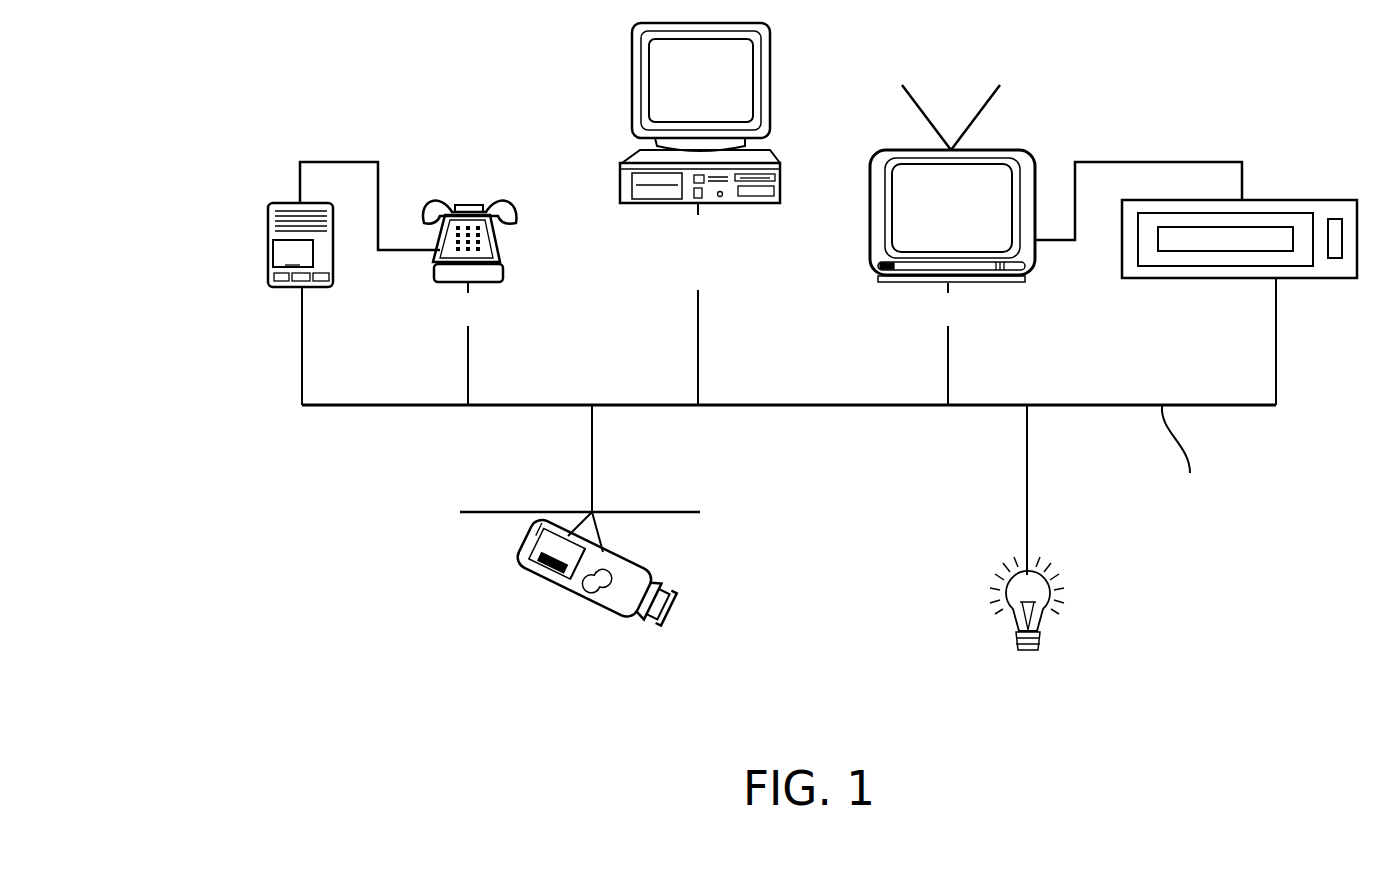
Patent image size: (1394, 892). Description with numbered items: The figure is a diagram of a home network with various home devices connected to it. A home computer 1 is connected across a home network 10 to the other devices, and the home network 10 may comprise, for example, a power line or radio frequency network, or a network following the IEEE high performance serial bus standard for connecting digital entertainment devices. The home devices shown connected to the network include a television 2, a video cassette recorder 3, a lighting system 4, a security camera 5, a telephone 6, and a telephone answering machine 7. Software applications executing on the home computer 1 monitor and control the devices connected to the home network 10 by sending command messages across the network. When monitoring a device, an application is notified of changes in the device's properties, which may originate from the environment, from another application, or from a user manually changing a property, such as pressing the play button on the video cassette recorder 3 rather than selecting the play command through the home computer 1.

The home computer 1 is at (772, 153).
The television 2 is at (1003, 150).
The video cassette recorder (VCR) 3 is at (1300, 200).
The lighting system 4 is at (1040, 641).
The security camera 5 is at (527, 552).
The telephone 6 is at (503, 250).
The telephone answering machine 7 is at (268, 235).
The home network 10 is at (1237, 407).